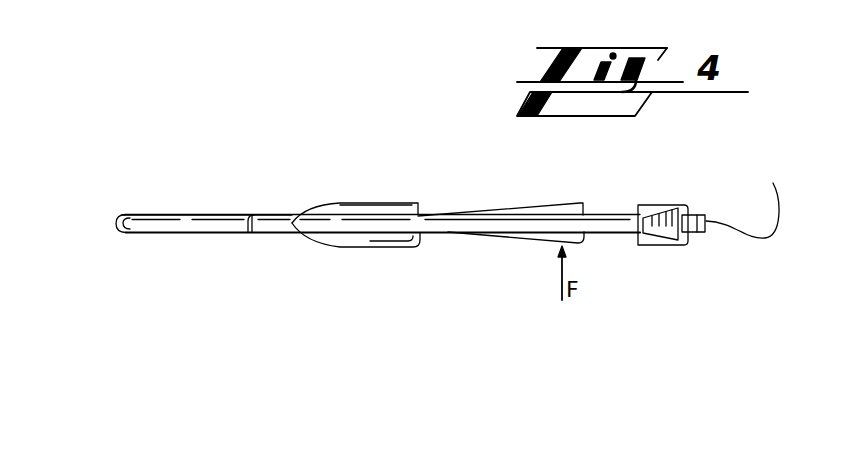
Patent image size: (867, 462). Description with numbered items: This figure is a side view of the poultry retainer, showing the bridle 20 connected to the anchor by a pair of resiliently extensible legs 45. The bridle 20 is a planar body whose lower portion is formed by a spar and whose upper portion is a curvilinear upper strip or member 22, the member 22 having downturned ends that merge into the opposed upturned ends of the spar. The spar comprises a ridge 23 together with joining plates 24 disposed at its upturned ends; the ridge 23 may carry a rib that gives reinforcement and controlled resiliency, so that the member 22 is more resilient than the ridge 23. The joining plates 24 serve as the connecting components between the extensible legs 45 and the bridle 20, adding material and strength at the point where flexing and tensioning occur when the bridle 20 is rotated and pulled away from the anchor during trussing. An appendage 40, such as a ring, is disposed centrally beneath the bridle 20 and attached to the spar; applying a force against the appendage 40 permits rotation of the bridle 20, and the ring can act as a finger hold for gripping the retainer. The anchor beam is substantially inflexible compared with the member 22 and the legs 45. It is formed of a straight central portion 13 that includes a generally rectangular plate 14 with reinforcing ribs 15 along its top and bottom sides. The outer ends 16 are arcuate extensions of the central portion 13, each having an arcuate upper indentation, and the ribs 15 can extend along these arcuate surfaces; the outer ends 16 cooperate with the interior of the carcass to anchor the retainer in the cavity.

The central portion 13 is at (747, 192).
The rectangular plate 14 is at (690, 245).
The reinforcing ribs 15 is at (646, 205).
The outer ends 16 is at (626, 232).
The bridle 20 is at (113, 200).
The curvilinear upper strip or member 22 is at (162, 224).
The ridge 23 is at (367, 235).
The joining plates 24 is at (276, 218).
The appendage 40 is at (593, 199).
The resiliently extensible legs 45 is at (497, 220).